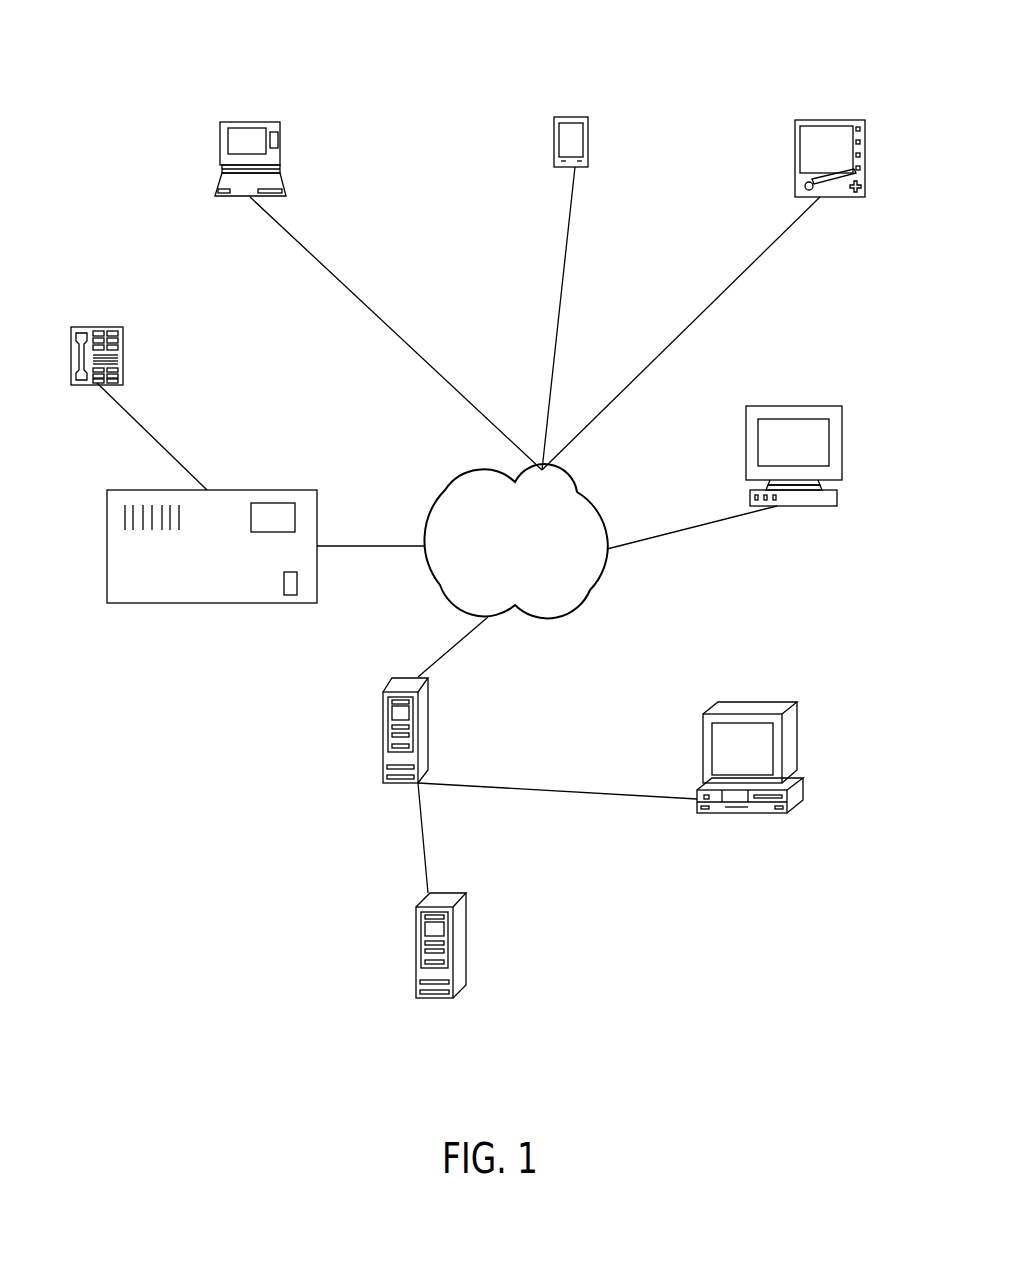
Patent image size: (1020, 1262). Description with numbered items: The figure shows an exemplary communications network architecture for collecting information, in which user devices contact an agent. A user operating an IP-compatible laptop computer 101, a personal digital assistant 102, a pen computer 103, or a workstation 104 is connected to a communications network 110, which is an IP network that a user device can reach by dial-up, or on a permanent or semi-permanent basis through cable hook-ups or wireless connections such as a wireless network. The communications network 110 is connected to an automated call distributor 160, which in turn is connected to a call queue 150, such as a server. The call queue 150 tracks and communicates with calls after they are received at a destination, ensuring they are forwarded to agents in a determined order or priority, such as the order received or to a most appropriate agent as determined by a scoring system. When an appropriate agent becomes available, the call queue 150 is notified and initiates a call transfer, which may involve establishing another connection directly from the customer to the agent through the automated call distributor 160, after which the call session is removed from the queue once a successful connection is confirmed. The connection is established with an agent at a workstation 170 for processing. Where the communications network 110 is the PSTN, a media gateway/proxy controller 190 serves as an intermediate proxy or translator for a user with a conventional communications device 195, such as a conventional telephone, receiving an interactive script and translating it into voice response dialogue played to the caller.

The laptop computer 101 is at (245, 121).
The personal digital assistant (PDA) 102 is at (575, 117).
The pen computer 103 is at (818, 120).
The workstation 104 is at (794, 406).
The communications network 110 is at (478, 471).
The call queue 150 is at (431, 998).
The automated call distributor (ACD) 160 is at (383, 775).
The workstation 170 is at (752, 702).
The media gateway/proxy controller 190 is at (226, 603).
The conventional communications device 195 is at (97, 327).